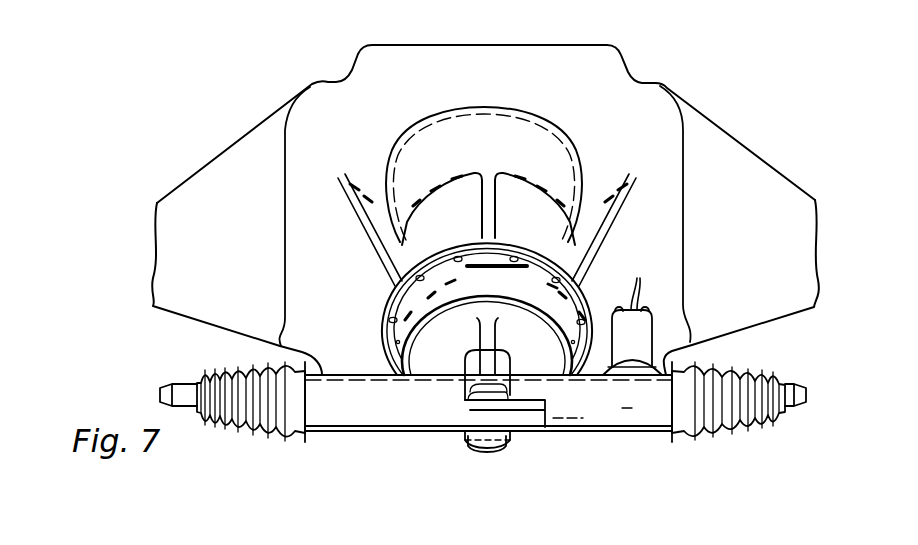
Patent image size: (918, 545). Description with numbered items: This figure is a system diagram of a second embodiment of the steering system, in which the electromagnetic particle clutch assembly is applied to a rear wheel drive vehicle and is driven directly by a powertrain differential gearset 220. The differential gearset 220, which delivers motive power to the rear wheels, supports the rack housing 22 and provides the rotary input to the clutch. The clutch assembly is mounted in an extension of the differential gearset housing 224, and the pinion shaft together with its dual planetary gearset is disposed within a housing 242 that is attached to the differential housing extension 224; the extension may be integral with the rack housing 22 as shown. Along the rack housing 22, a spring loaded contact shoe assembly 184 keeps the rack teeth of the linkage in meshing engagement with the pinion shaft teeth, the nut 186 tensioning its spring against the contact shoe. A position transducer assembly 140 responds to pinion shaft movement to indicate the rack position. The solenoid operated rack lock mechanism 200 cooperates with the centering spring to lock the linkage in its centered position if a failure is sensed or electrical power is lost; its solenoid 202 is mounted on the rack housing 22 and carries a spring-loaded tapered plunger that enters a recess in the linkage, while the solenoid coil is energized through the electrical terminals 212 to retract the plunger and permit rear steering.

The rack housing 22 is at (580, 408).
The position transducer assembly 140 is at (527, 418).
The contact shoe assembly 184 is at (465, 446).
The nut 186 is at (480, 455).
The solenoid operated rack lock mechanism 200 is at (645, 336).
The solenoid 202 is at (642, 350).
The electrical terminals 212 is at (648, 277).
The differential gearset 220 is at (650, 113).
The differential gearset housing extension 224 is at (417, 244).
The housing 242 is at (417, 304).